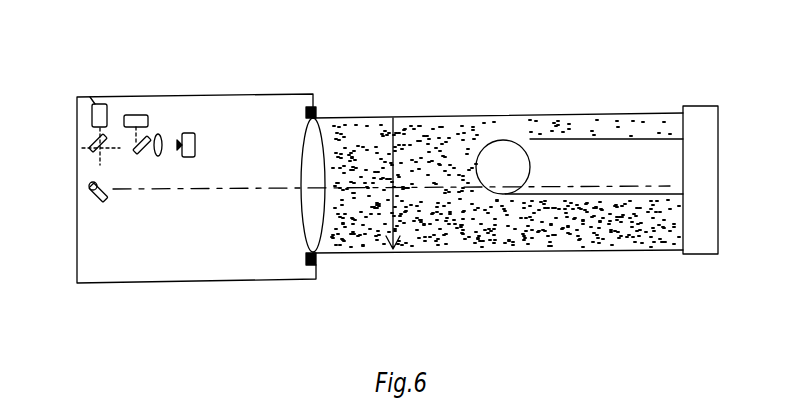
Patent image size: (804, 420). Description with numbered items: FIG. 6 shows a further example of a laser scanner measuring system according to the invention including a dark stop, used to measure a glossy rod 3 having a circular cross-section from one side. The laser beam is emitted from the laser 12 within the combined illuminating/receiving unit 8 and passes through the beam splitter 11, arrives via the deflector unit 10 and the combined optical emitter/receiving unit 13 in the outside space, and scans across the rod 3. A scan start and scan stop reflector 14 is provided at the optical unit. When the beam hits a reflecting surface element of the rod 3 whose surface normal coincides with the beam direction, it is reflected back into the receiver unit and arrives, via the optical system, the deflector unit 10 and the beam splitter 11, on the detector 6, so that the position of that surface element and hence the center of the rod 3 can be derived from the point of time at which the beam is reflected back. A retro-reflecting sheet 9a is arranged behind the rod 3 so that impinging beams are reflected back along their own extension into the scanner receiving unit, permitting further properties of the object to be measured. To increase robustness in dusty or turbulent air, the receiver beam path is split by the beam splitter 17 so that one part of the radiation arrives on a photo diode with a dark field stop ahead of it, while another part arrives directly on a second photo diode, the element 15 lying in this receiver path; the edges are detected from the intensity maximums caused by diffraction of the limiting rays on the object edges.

The rod 3 is at (502, 138).
The detector 6 is at (150, 121).
The combined illuminating/receiving unit 8 is at (160, 93).
The retro-reflecting sheet 9a is at (693, 103).
The deflector unit 10 is at (104, 205).
The beam splitter 11 is at (83, 137).
The laser 12 is at (83, 92).
The combined optical emitter/receiving unit 13 is at (312, 160).
The scan start and scan stop reflector 14 is at (306, 112).
The small lens 15 is at (172, 157).
The beam splitter 17 is at (150, 160).